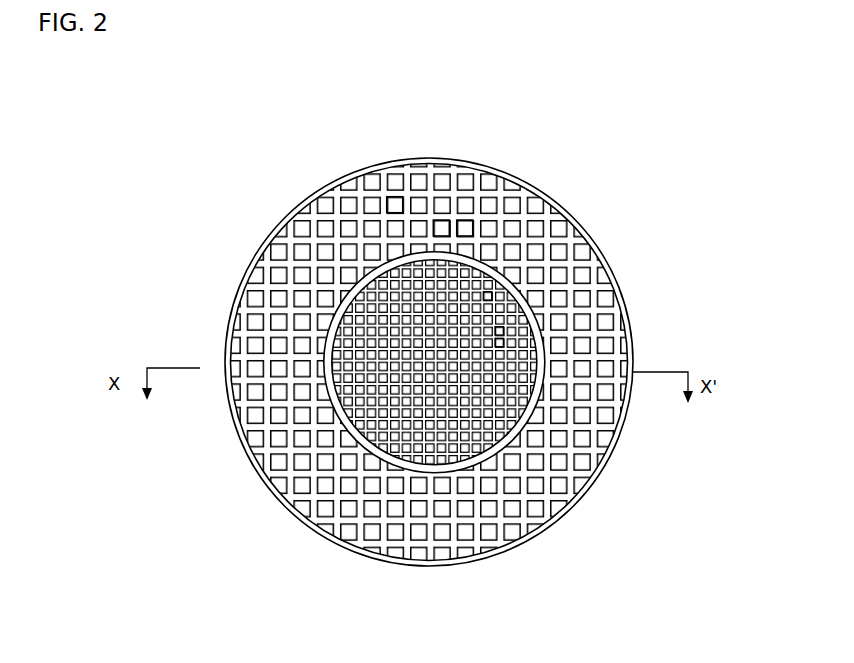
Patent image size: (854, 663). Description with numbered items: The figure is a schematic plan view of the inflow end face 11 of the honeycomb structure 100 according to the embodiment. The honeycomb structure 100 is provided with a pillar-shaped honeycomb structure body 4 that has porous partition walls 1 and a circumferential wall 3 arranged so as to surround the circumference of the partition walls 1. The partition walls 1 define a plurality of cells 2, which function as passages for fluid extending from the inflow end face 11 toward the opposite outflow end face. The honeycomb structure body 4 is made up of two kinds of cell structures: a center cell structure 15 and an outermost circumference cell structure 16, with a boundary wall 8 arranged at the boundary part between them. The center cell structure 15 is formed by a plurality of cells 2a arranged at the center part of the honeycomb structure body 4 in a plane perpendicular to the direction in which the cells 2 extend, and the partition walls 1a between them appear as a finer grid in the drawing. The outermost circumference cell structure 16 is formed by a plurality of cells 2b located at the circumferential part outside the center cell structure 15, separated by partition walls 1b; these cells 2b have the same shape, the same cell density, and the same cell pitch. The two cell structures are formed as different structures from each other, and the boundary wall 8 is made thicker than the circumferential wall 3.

The honeycomb structure 100 is at (736, 84).
The inflow end face 11 is at (278, 213).
The partition walls 1 is at (536, 216).
The central partition wall 1a is at (503, 337).
The outer partition wall 1b is at (452, 225).
The cells 2 is at (497, 195).
The cells 2a is at (489, 305).
The cells 2b is at (396, 207).
The circumferential wall 3 is at (608, 267).
The honeycomb structure body 4 is at (626, 432).
The boundary wall 8 is at (543, 363).
The center cell structure 15 is at (360, 432).
The outermost circumference cell structure 16 is at (373, 507).